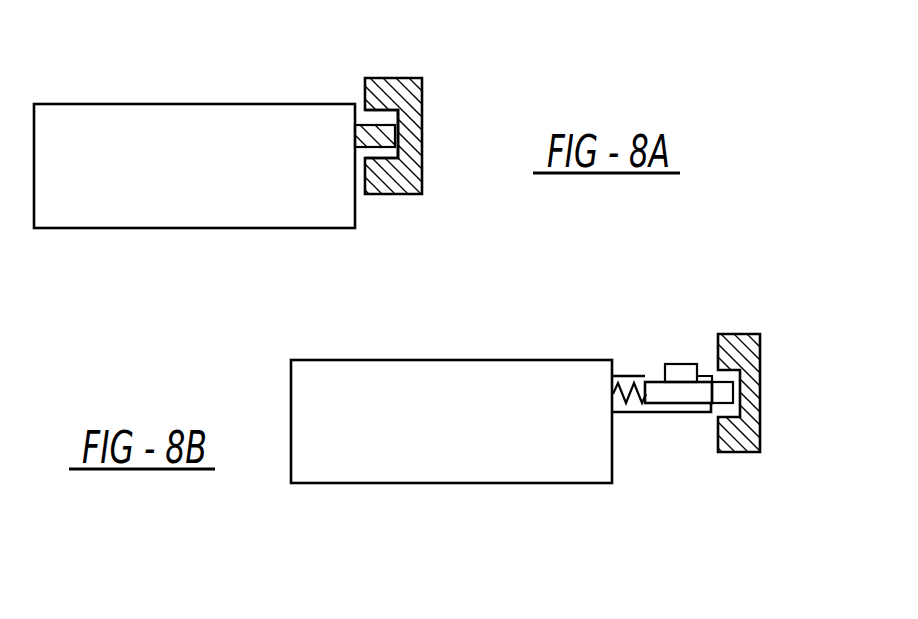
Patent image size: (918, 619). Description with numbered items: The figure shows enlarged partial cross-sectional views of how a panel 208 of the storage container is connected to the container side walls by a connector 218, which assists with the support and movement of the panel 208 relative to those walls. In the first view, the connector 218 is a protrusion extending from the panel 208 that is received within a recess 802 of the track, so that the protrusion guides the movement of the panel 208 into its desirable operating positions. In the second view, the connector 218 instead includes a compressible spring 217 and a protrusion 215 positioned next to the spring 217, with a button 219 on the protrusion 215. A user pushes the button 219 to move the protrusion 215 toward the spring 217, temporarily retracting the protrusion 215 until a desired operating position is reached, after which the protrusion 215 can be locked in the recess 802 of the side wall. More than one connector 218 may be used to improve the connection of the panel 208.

In FIG. 8A, the second panel 208 is at (165, 190).
In FIG. 8B, the second panel 208 is at (443, 436).
In FIG. 8B, the protrusion 215 is at (728, 405).
In FIG. 8B, the compressible spring 217 is at (633, 392).
In FIG. 8A, the connector 218 is at (373, 122).
In FIG. 8B, the connector 218 is at (672, 423).
In FIG. 8B, the button 219 is at (686, 362).
In FIG. 8A, the recess 802 is at (392, 118).